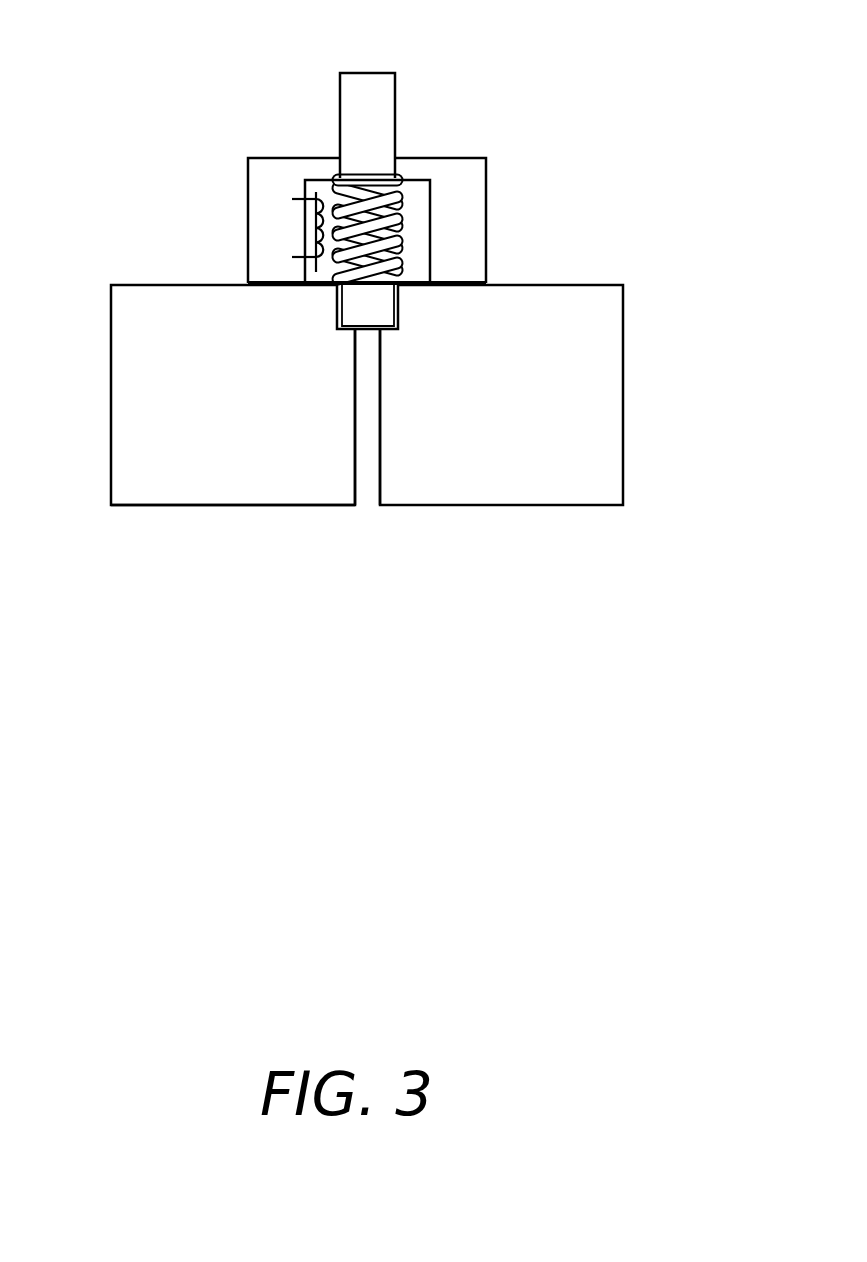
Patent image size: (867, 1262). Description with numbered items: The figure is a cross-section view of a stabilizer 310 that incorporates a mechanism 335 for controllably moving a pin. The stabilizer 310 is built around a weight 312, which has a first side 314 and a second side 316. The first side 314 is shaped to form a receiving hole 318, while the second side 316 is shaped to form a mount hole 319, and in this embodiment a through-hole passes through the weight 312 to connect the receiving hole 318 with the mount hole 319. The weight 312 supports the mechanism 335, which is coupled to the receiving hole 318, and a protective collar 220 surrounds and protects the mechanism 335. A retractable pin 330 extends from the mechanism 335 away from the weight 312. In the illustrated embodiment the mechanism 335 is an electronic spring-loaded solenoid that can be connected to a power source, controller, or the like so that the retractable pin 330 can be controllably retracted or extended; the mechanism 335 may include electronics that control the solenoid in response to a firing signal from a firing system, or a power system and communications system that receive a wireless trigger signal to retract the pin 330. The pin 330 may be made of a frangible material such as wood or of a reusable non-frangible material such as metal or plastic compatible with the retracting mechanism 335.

The stabilizer 310 is at (619, 73).
The weight 312 is at (594, 300).
The first side 314 is at (131, 285).
The second side 316 is at (130, 504).
The receiving hole 318 is at (398, 330).
The mount hole 319 is at (378, 470).
The protective collar 220 is at (477, 158).
The retractable pin 330 is at (369, 73).
The mechanism 335 is at (303, 232).